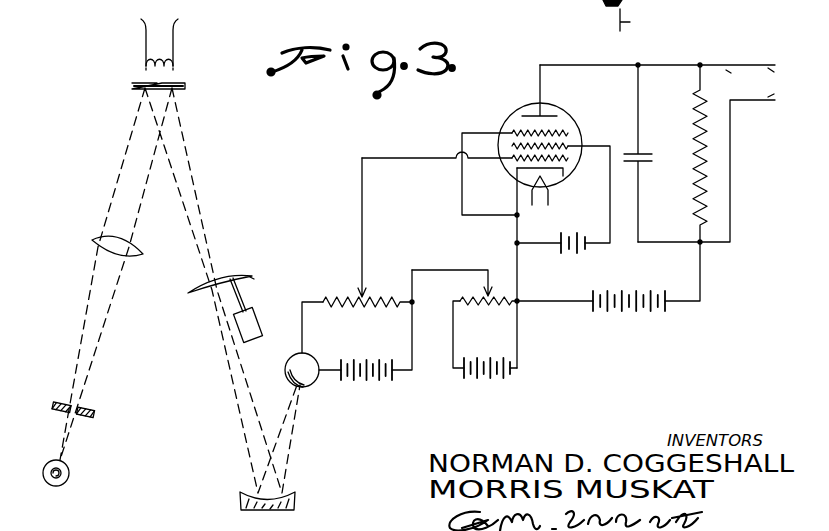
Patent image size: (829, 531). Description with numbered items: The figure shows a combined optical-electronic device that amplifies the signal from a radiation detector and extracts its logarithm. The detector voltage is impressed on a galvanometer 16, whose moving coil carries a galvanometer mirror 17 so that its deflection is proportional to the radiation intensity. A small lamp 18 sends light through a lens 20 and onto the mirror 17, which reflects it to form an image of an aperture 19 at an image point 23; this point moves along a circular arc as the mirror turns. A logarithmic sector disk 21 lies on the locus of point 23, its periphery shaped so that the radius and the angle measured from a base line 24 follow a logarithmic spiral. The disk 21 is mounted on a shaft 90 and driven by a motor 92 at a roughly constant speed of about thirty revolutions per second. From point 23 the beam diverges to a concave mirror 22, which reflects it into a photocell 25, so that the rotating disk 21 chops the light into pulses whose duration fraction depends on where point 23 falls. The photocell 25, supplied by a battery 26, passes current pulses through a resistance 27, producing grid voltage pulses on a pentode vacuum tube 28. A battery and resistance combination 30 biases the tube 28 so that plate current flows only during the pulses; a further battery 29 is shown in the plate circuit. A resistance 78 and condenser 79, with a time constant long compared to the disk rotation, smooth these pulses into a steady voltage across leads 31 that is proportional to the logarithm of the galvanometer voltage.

The galvanometer 16 is at (178, 46).
The galvanometer mirror 17 is at (185, 87).
The lamp 18 is at (70, 473).
The aperture 19 is at (95, 413).
The lens 20 is at (96, 243).
The logarithmic sector disk 21 is at (252, 278).
The concave mirror 22 is at (300, 505).
The image point 23 is at (214, 296).
The base line 24 is at (634, 15).
The photocell 25 is at (318, 385).
The battery 26 is at (396, 383).
The resistance 27 is at (368, 232).
The pentode vacuum tube 28 is at (515, 108).
The battery 29 is at (497, 381).
The battery and resistance combination 30 is at (482, 306).
The leads 31 is at (714, 155).
The resistance 78 is at (692, 178).
The condenser 79 is at (660, 147).
The shaft 90 is at (233, 278).
The motor 92 is at (258, 318).